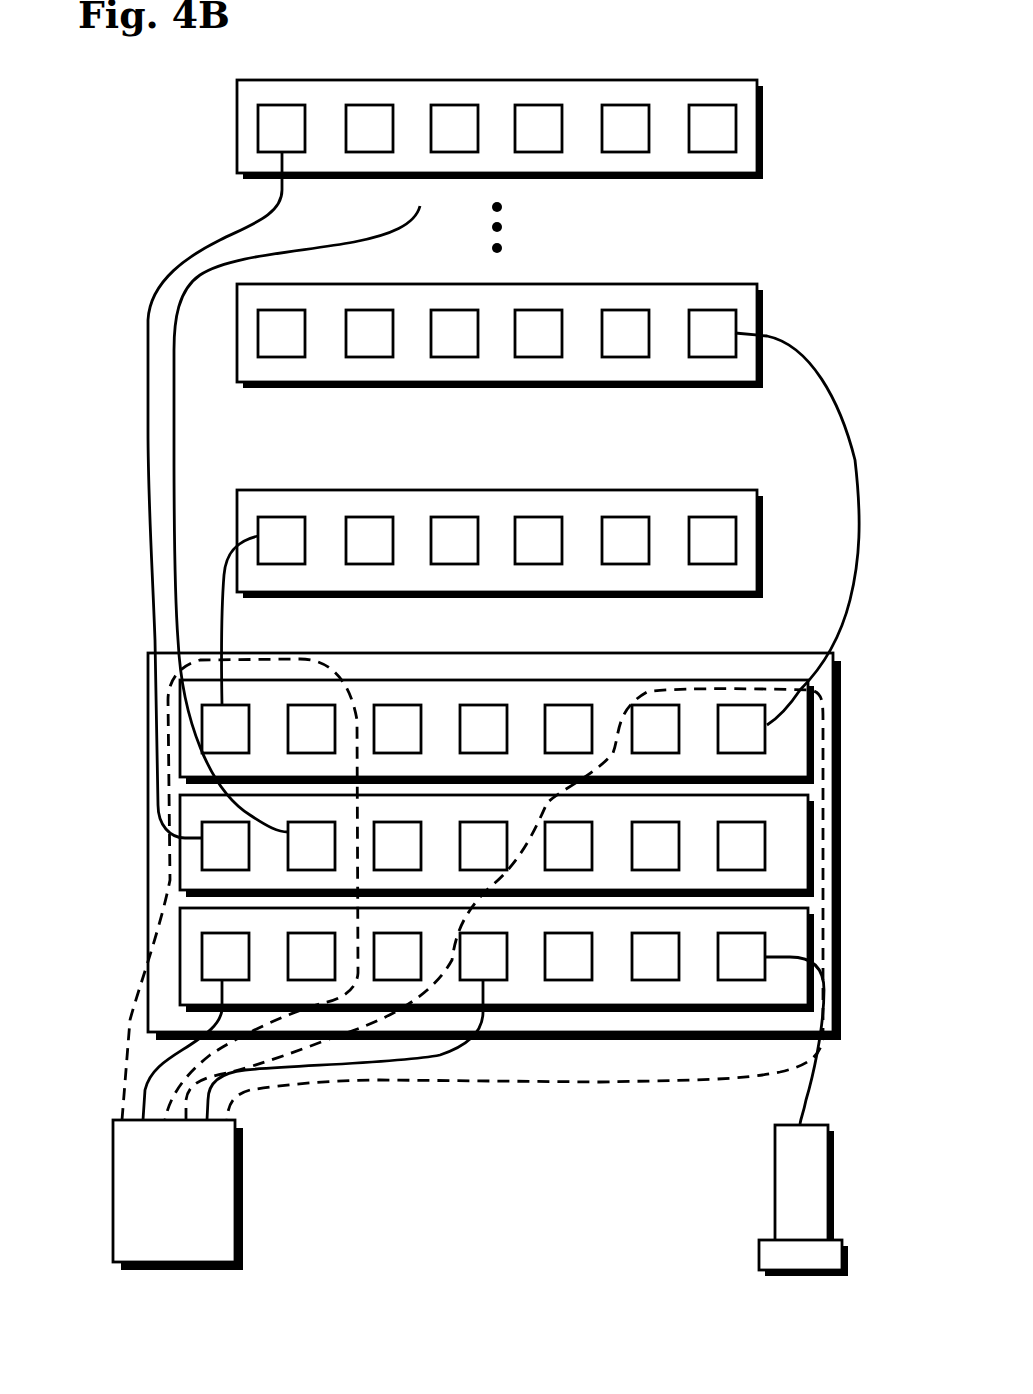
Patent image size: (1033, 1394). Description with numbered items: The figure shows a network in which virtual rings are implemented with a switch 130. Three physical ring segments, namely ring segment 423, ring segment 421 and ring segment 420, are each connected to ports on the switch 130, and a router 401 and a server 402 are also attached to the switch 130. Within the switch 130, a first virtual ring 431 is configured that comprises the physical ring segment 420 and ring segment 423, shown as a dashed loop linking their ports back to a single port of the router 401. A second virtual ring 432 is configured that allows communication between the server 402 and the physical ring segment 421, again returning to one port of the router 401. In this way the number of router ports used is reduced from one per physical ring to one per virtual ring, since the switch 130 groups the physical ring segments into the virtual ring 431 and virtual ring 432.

The ring segment 423 is at (558, 80).
The ring segment 421 is at (557, 284).
The ring segment 420 is at (453, 490).
The switch 130 is at (148, 883).
The first virtual ring 431 is at (148, 720).
The second virtual ring 432 is at (507, 1085).
The router 401 is at (178, 1225).
The server 402 is at (802, 1228).